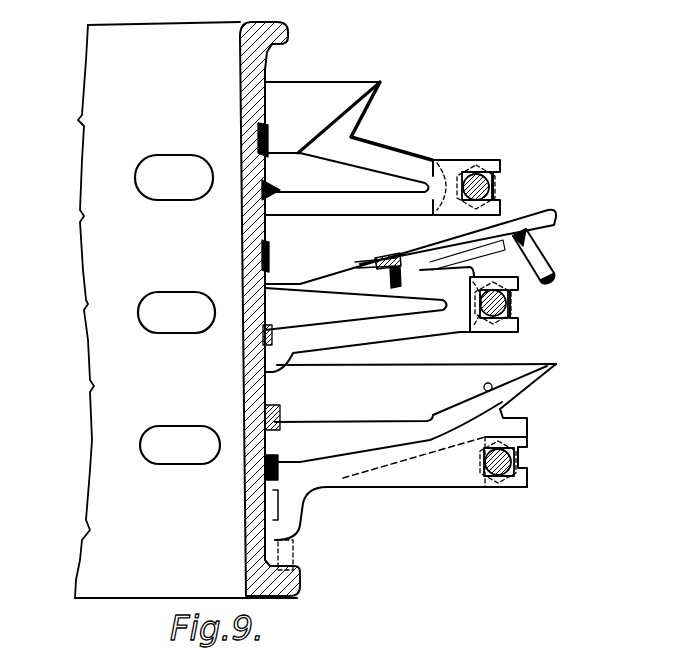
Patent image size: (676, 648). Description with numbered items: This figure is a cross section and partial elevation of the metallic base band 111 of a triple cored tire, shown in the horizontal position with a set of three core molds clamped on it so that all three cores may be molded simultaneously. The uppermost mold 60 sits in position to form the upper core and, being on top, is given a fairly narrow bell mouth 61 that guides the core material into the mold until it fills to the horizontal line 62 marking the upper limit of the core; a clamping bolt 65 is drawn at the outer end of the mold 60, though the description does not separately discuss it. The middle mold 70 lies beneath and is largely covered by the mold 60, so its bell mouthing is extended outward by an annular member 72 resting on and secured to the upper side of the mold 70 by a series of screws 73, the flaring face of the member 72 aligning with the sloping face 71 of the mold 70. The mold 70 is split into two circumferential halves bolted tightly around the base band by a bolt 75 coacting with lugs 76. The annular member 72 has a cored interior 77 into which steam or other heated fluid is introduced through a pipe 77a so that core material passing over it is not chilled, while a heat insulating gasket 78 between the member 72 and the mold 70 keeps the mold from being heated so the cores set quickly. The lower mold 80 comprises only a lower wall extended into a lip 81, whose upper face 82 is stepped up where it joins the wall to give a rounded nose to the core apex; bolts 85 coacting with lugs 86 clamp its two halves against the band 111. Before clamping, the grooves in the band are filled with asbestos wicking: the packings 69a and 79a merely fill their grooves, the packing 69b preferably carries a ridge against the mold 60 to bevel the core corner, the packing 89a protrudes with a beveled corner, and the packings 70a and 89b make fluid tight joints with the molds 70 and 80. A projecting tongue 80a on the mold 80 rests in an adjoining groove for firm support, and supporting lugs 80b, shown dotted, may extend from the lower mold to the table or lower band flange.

The mold 60 is at (405, 162).
The bell mouth 61 is at (383, 86).
The horizontal line 62 is at (285, 152).
The clamping nut 65 is at (492, 188).
The packing 69a is at (265, 136).
The packing 69b is at (265, 198).
The mold 70 is at (415, 338).
The packing 70a is at (265, 365).
The sloping face 71 is at (330, 275).
The annular member 72 is at (462, 233).
The screws 73 is at (392, 258).
The bolt 75 is at (508, 305).
The lugs 76 is at (518, 325).
The cored interior 77 is at (518, 238).
The pipe 77a is at (538, 265).
The heat insulating gasket 78 is at (367, 265).
The packing 79a is at (265, 287).
The mold 80 is at (367, 470).
The projecting tongue 80a is at (275, 533).
The supporting lugs 80b is at (293, 558).
The lip 81 is at (537, 381).
The upper face 82 is at (505, 408).
The bolts 85 is at (530, 455).
The lugs 86 is at (527, 425).
The packing 89a is at (265, 413).
The packing 89b is at (265, 478).
The base band 111 is at (247, 542).